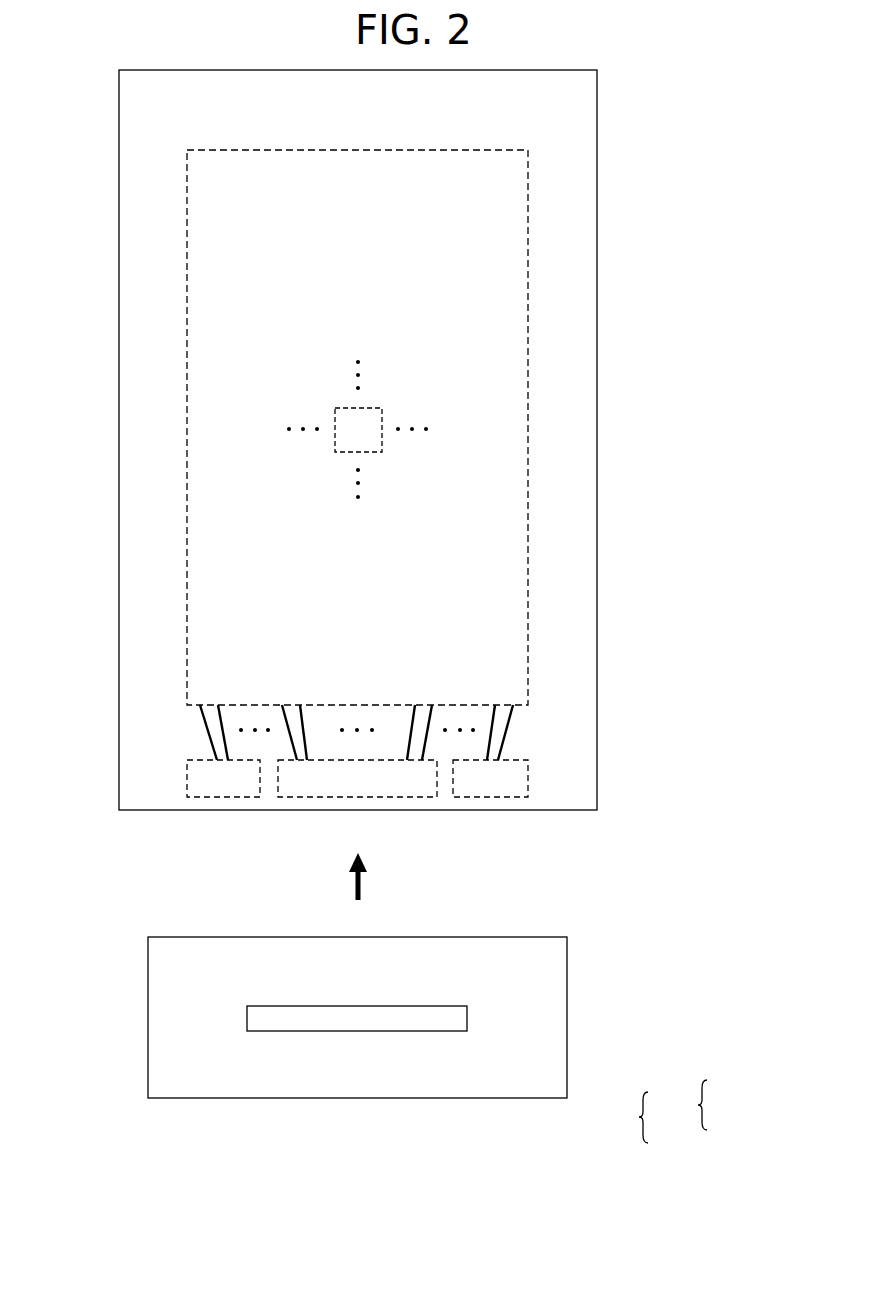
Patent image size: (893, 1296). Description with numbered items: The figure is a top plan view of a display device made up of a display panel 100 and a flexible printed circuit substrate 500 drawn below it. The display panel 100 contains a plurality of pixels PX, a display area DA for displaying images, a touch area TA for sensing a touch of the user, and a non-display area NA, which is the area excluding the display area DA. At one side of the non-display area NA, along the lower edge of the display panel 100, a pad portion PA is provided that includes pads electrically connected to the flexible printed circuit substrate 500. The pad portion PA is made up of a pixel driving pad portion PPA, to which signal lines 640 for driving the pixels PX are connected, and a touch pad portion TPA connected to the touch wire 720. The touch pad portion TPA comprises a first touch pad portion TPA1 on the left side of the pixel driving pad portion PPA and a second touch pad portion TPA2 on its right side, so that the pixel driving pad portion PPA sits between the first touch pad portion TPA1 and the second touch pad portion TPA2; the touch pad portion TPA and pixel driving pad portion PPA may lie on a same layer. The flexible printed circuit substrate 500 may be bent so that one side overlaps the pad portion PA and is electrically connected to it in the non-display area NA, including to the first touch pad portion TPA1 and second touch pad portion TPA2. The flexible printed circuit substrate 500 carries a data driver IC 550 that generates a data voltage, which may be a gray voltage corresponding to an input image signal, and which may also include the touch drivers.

The display panel 100 is at (600, 101).
The non-display area NA is at (570, 238).
The display area DA is at (434, 427).
The touch area TA is at (530, 368).
The pixel PX is at (357, 429).
The touch wire 720 is at (213, 743).
The first touch pad portion TPA1 is at (204, 797).
The signal lines 640 is at (292, 746).
The pixel driving pad portion PPA is at (410, 797).
The second touch pad portion TPA2 is at (508, 797).
The flexible printed circuit substrate 500 is at (575, 952).
The data driver IC 550 is at (467, 1019).
The pad portion PA is at (681, 1112).
The touch pad portion TPA is at (705, 1112).